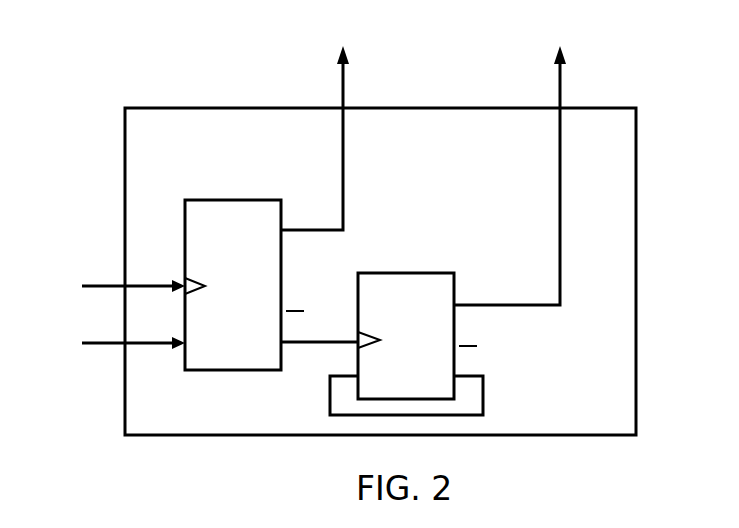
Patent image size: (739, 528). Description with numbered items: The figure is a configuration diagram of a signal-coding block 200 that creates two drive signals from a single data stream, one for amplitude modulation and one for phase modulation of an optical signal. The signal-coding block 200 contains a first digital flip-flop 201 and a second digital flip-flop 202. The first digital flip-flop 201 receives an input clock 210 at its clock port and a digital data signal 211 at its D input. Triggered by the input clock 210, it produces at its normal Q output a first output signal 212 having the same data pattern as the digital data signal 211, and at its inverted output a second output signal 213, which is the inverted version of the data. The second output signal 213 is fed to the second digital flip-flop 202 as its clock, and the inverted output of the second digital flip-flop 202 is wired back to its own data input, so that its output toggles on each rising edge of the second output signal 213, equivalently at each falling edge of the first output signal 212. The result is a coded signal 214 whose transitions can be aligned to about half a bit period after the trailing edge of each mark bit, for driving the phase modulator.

The signal-coding block 200 is at (192, 158).
The first digital flip-flop 201 is at (270, 359).
The second digital flip-flop 202 is at (444, 390).
The input clock 210 is at (83, 282).
The digital data signal 211 is at (102, 350).
The first output signal 212 is at (344, 145).
The second output signal 213 is at (340, 340).
The coded signal 214 is at (561, 148).